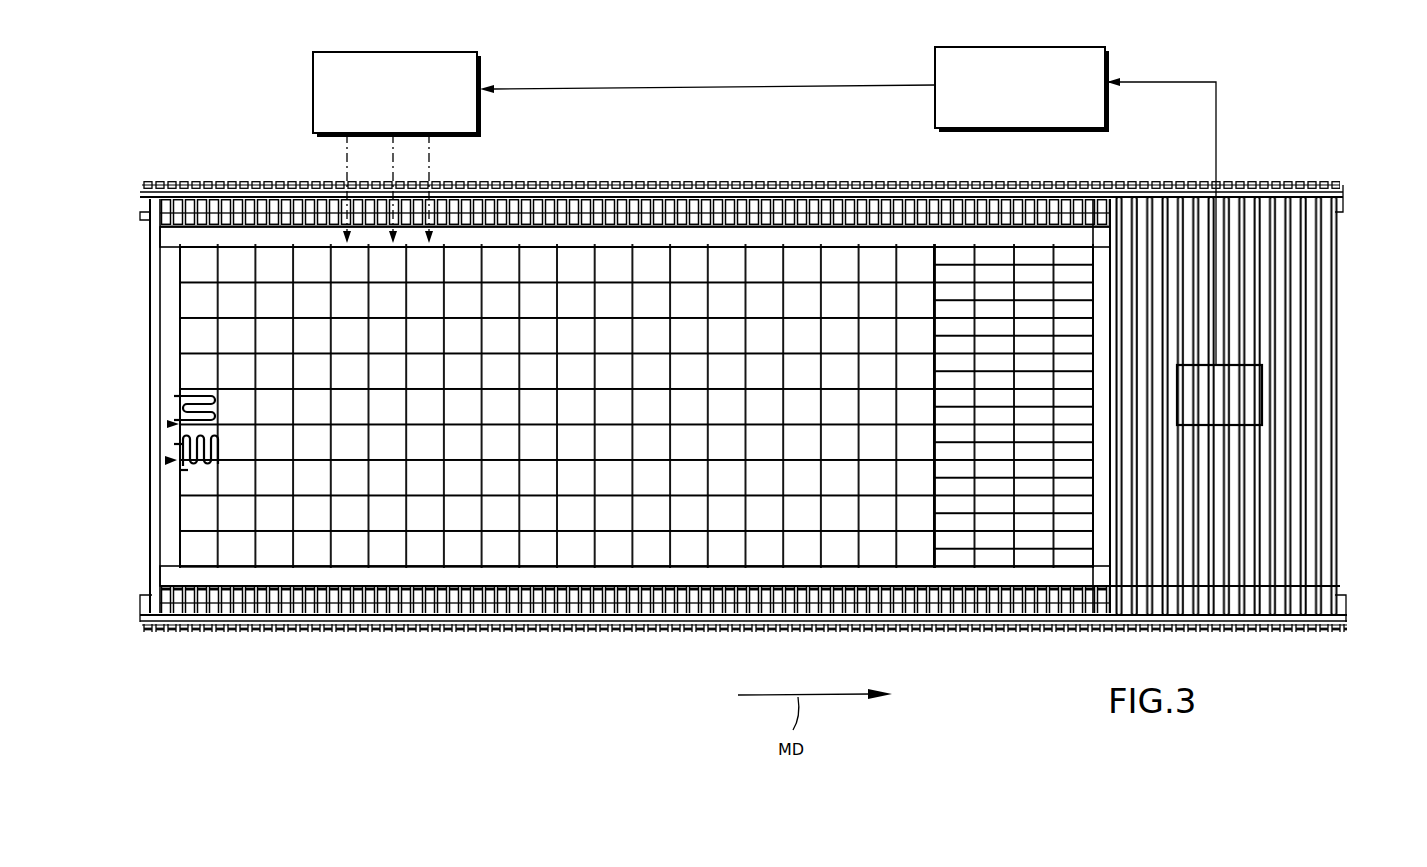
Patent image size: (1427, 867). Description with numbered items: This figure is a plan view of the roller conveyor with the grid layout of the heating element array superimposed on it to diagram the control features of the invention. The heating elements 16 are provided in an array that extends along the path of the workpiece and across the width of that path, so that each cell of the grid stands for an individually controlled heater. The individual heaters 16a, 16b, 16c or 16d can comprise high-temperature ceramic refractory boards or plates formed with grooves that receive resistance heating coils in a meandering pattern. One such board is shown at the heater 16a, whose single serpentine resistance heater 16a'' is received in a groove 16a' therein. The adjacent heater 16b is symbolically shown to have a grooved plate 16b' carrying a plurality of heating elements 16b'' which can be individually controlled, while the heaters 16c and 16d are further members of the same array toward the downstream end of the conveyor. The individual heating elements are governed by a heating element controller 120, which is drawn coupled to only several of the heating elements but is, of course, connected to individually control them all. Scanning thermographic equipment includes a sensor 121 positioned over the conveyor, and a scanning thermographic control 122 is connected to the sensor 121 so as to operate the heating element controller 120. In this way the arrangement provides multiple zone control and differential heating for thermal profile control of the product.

The heating elements 16 is at (236, 266).
The heater 16a is at (139, 416).
The groove 16a' is at (125, 366).
The resistance heater 16a'' is at (129, 398).
The heater 16b is at (149, 469).
The grooved plate 16b' is at (138, 503).
The heating elements 16b'' is at (123, 460).
The heater 16c is at (960, 533).
The heater 16d is at (998, 554).
The heating element controller 120 is at (325, 82).
The sensor 121 is at (1250, 392).
The scanning thermographic control 122 is at (935, 68).